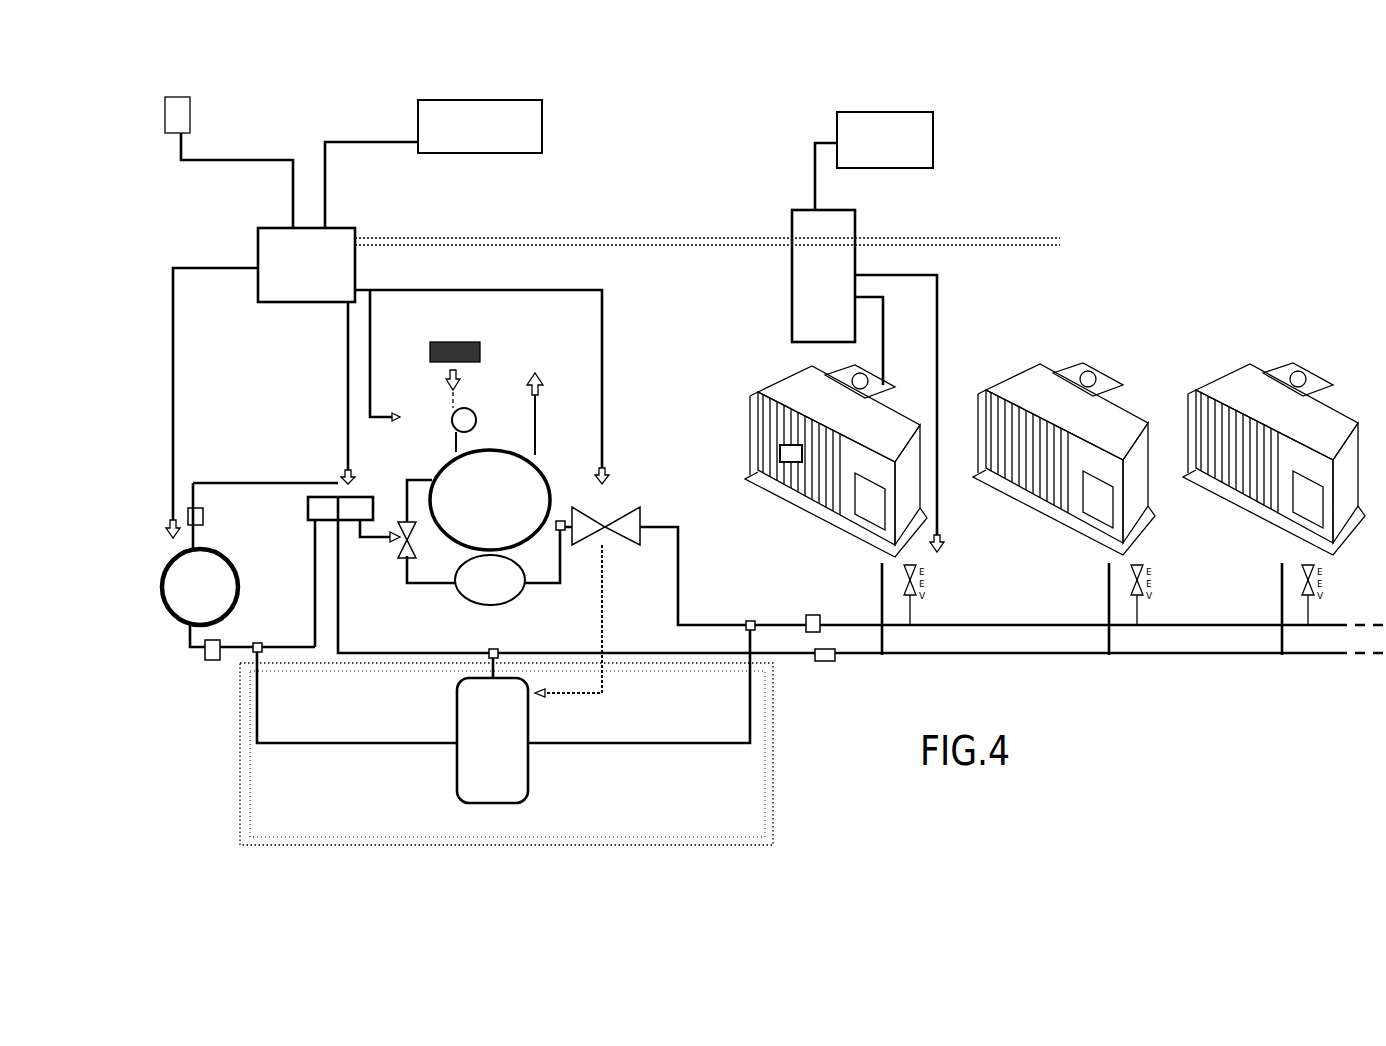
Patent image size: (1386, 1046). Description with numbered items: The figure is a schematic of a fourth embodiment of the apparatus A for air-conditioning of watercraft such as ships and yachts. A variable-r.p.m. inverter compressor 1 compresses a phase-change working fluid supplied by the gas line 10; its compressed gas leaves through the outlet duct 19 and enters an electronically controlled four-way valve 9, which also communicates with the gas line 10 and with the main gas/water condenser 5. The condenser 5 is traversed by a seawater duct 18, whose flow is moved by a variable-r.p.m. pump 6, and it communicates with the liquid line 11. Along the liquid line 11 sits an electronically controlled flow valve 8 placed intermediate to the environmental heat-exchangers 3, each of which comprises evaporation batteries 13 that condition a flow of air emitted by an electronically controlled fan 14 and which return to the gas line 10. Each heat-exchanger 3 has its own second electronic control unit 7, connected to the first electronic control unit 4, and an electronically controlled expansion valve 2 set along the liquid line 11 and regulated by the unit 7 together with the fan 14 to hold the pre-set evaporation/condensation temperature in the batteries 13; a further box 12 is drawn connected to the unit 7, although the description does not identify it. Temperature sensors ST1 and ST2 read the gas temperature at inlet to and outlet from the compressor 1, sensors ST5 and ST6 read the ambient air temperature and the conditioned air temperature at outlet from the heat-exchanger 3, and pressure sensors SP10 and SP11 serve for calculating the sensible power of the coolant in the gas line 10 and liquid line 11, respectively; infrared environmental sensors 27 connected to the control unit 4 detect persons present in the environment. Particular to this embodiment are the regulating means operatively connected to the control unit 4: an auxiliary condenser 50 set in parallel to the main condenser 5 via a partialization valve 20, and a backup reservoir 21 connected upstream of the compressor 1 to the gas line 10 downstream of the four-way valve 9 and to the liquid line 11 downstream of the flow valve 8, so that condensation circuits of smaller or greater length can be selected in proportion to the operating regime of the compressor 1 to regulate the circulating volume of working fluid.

The apparatus A is at (1287, 153).
The variable-r.p.m. compressor 1 is at (178, 592).
The electronically controlled expansion valve 2 is at (914, 596).
The environmental heat-exchanger 3 is at (778, 390).
The first electronic control unit 4 is at (288, 252).
The main gas/water condenser 5 is at (492, 515).
The variable-r.p.m. pump 6 is at (467, 410).
The second electronic control unit 7 is at (818, 262).
The electronically controlled flow valve 8 is at (633, 520).
The electronically controlled four-way valve 9 is at (325, 510).
The gas line 10 is at (654, 652).
The liquid line 11 is at (682, 600).
The display unit 12 is at (874, 161).
The evaporation batteries 13 is at (832, 472).
The electronically controlled fan 14 is at (913, 390).
The seawater duct 18 is at (446, 340).
The compressed gas outlet duct 19 is at (298, 643).
The partialization valve 20 is at (393, 547).
The backup reservoir 21 is at (506, 712).
The infrared environmental sensors 27 is at (433, 164).
The auxiliary condenser 50 is at (489, 564).
The first temperature sensor ST1 is at (212, 660).
The second temperature sensor ST2 is at (195, 508).
The ambient temperature sensor ST5 is at (182, 123).
The conditioned air temperature sensor ST6 is at (780, 462).
The pressure sensor SP10 is at (827, 662).
The pressure sensor SP11 is at (810, 616).